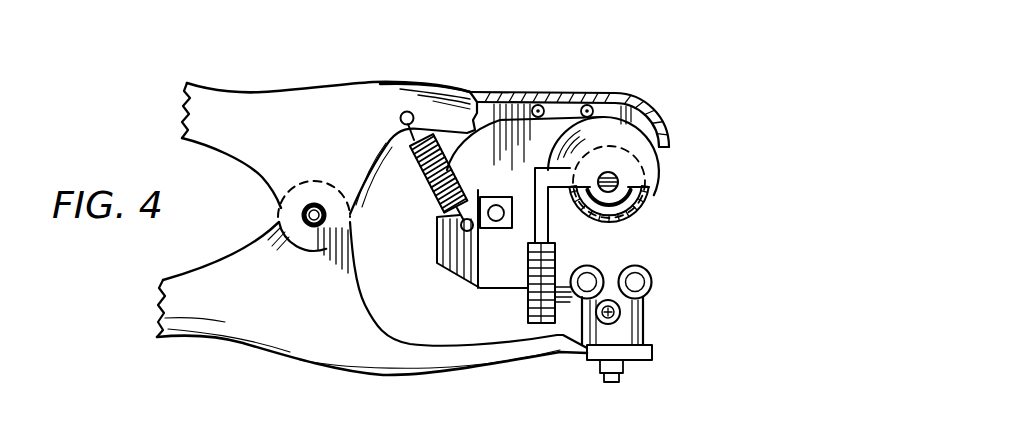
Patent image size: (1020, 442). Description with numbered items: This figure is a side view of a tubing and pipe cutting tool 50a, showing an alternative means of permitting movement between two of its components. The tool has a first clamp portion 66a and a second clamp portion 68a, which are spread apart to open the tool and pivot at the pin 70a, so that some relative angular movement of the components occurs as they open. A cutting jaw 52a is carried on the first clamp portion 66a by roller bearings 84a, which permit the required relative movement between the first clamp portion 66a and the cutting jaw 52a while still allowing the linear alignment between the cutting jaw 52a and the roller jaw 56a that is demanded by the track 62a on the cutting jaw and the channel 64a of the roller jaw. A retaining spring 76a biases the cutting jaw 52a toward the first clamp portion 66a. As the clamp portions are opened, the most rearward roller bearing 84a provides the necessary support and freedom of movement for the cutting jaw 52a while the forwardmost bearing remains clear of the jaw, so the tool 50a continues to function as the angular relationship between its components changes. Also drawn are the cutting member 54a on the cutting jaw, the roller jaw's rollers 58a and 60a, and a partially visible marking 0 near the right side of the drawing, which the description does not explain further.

The tool 50a is at (357, 70).
The first clamp portion 66a is at (327, 152).
The second clamp portion 68a is at (305, 308).
The pivot pin 70a is at (327, 220).
The retaining spring 76a is at (433, 207).
The cutting jaw 52a is at (497, 175).
The roller bearings 84a is at (579, 97).
The ratchet wheel 54a is at (643, 197).
The track 62a is at (553, 256).
The channel 64a is at (527, 262).
The spring wire 60a is at (555, 247).
The pawl block 58a is at (643, 289).
The roller jaw 56a is at (650, 335).
The partial reference numeral 0 is at (643, 230).